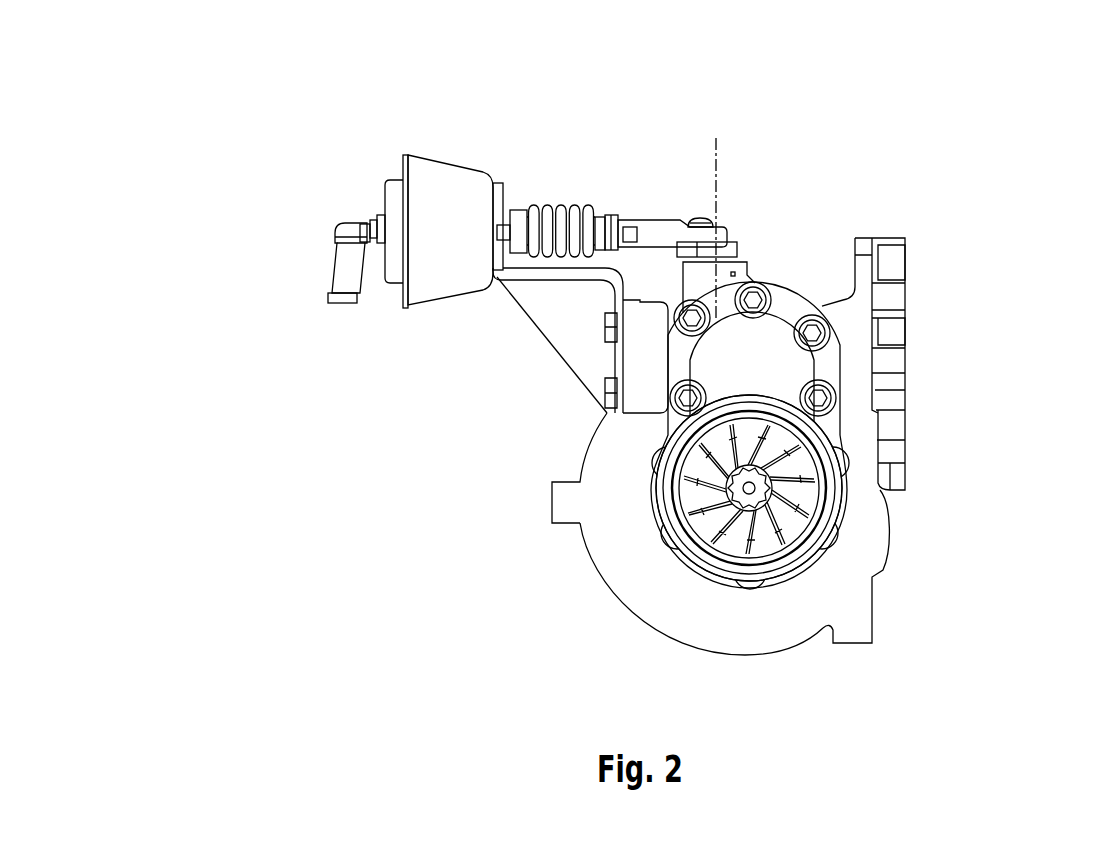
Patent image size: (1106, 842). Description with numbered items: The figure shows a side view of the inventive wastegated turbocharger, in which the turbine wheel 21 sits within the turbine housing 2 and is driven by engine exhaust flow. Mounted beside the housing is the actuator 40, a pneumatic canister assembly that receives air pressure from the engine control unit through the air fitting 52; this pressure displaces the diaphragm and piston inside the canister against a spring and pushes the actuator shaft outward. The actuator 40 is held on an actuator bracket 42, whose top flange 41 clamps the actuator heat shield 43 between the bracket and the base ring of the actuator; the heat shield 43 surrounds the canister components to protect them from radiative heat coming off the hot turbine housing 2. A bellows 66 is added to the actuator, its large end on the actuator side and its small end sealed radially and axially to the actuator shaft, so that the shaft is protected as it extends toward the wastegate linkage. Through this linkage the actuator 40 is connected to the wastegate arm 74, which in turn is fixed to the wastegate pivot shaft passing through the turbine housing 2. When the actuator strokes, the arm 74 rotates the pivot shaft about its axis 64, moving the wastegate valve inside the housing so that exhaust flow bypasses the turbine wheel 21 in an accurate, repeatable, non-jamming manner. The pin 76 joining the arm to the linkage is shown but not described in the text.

The turbine housing 2 is at (855, 375).
The turbine wheel 21 is at (762, 493).
The actuator 40 is at (397, 260).
The top flange 41 is at (503, 208).
The actuator bracket 42 is at (617, 342).
The actuator heat shield 43 is at (452, 162).
The air fitting 52 is at (343, 265).
The axis 64 is at (715, 163).
The bellows 66 is at (571, 205).
The wastegate arm 74 is at (737, 250).
The pivot pin 76 is at (723, 224).